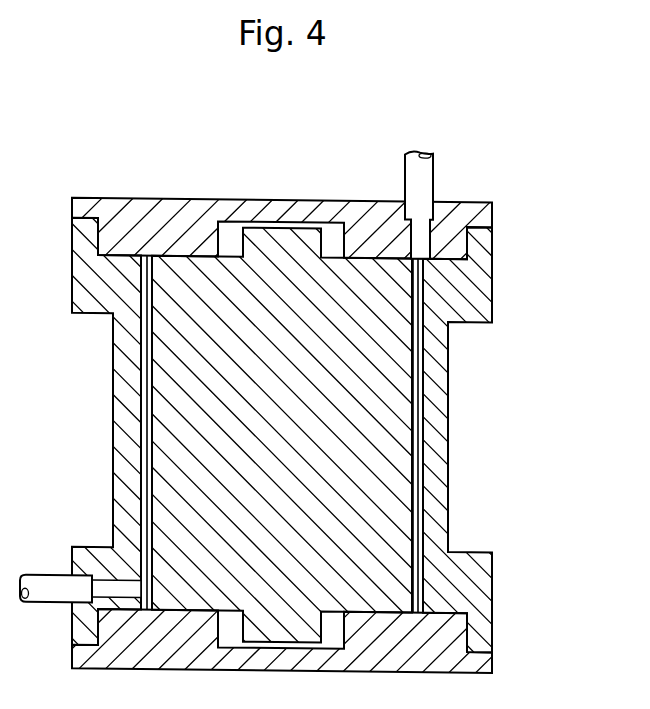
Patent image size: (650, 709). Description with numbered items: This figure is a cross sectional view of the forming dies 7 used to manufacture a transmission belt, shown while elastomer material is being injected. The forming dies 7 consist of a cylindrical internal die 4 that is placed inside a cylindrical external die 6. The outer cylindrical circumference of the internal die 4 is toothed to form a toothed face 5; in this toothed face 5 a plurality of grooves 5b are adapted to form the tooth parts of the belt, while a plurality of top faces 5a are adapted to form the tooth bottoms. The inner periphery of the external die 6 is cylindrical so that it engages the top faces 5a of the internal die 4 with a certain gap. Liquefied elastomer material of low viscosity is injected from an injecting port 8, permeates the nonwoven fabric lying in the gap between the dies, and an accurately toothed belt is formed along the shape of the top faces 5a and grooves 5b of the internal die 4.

The internal die 4 is at (207, 266).
The toothed face 5 is at (350, 434).
The top faces 5a is at (416, 443).
The grooves 5b is at (413, 483).
The external die 6 is at (120, 362).
The forming dies 7 is at (68, 218).
The injecting port 8 is at (100, 596).